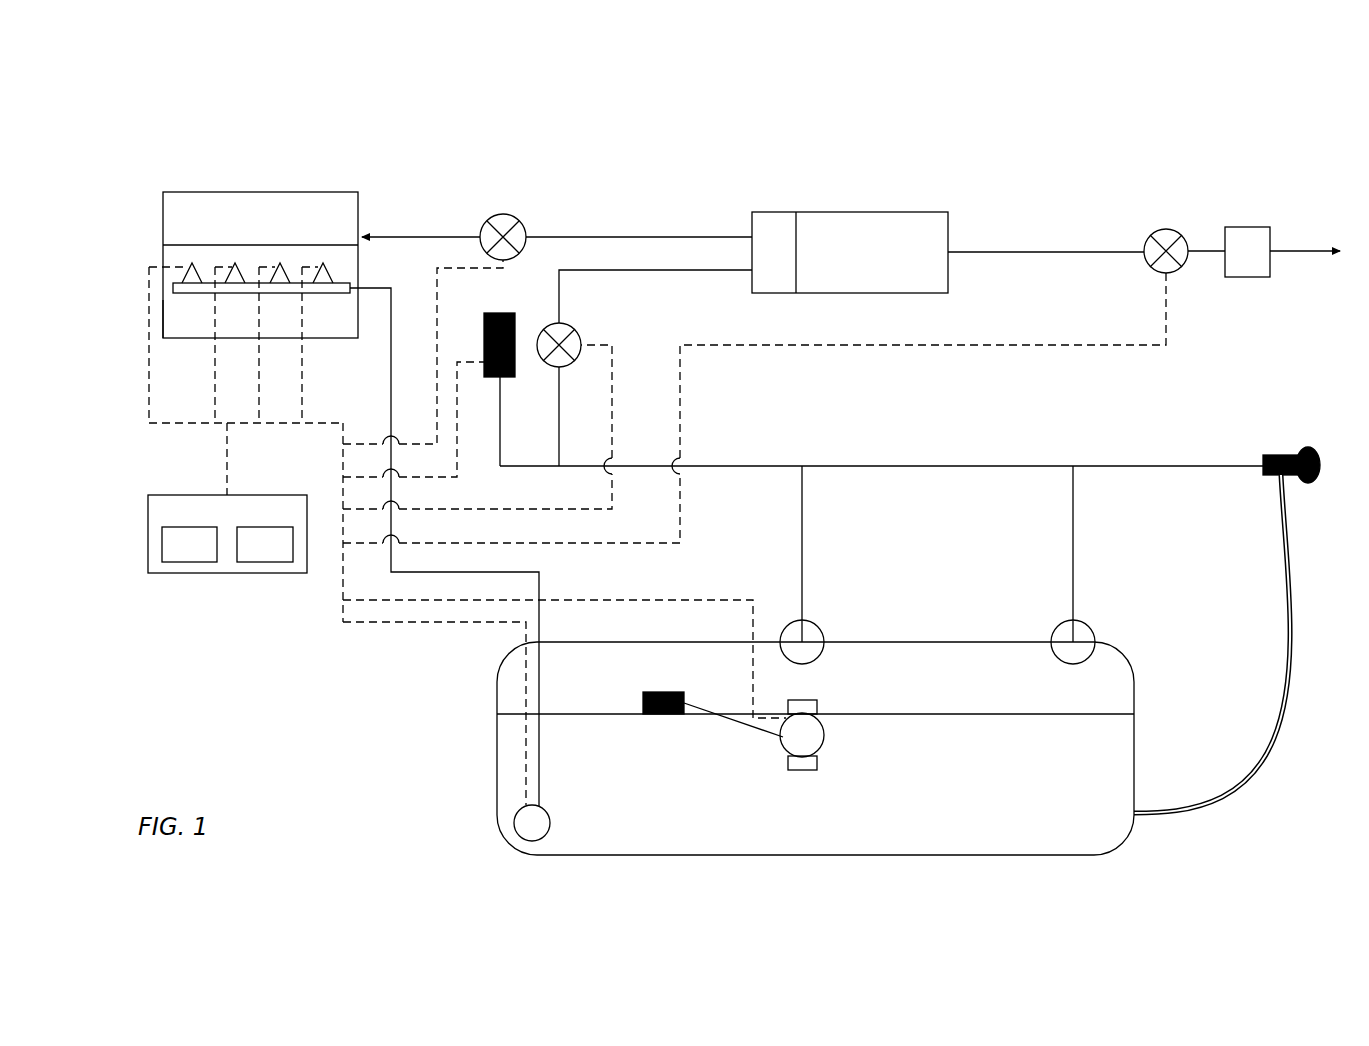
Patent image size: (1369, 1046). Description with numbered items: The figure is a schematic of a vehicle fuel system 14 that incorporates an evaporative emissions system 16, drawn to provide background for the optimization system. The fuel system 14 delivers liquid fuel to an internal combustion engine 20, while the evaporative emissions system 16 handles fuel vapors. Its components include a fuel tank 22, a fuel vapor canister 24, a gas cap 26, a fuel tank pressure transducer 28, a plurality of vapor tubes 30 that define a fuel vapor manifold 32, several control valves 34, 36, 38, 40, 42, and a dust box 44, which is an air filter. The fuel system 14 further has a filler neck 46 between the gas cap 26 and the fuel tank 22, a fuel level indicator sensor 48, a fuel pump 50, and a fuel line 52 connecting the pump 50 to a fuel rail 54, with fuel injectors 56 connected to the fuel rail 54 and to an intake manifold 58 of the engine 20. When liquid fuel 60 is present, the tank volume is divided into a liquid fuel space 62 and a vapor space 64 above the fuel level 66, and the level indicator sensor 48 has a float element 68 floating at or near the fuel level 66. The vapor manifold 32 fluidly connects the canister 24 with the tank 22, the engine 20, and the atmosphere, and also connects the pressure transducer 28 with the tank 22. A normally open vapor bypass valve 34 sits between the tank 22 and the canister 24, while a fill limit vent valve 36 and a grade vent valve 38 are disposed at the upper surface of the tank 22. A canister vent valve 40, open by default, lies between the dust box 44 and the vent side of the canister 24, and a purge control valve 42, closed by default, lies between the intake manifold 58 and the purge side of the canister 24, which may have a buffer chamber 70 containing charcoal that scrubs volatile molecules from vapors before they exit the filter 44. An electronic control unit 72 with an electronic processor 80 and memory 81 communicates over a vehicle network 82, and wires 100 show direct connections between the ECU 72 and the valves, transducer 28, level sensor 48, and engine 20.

The fuel system 14 is at (228, 140).
The evaporative emissions system 16 is at (668, 173).
The internal combustion engine 20 is at (163, 262).
The fuel tank 22 is at (1060, 855).
The fuel vapor canister 24 is at (915, 212).
The gas cap 26 is at (1305, 448).
The fuel tank pressure transducer 28 is at (500, 313).
The vapor tubes 30 is at (633, 270).
The fuel vapor manifold 32 is at (745, 440).
The vapor bypass valve 34 is at (571, 327).
The fill limit vent valve 36 is at (813, 622).
The grade vent valve 38 is at (1085, 622).
The canister vent valve 40 is at (1166, 228).
The purge control valve 42 is at (507, 215).
The dust box 44 is at (1262, 227).
The filler neck 46 is at (1280, 727).
The fuel level indicator sensor 48 is at (780, 753).
The fuel pump 50 is at (550, 820).
The fuel line 52 is at (539, 762).
The fuel rail 54 is at (340, 283).
The fuel injectors 56 is at (192, 263).
The intake manifold 58 is at (163, 207).
The liquid fuel 60 is at (912, 698).
The liquid fuel space 62 is at (970, 792).
The vapor space 64 is at (980, 687).
The fuel level 66 is at (1003, 714).
The float element 68 is at (655, 692).
The buffer chamber 70 is at (773, 212).
The electronic control unit 72 is at (148, 512).
The electronic processor 80 is at (177, 562).
The memory 81 is at (250, 562).
The vehicle network 82 is at (172, 423).
The wires 100 is at (302, 408).